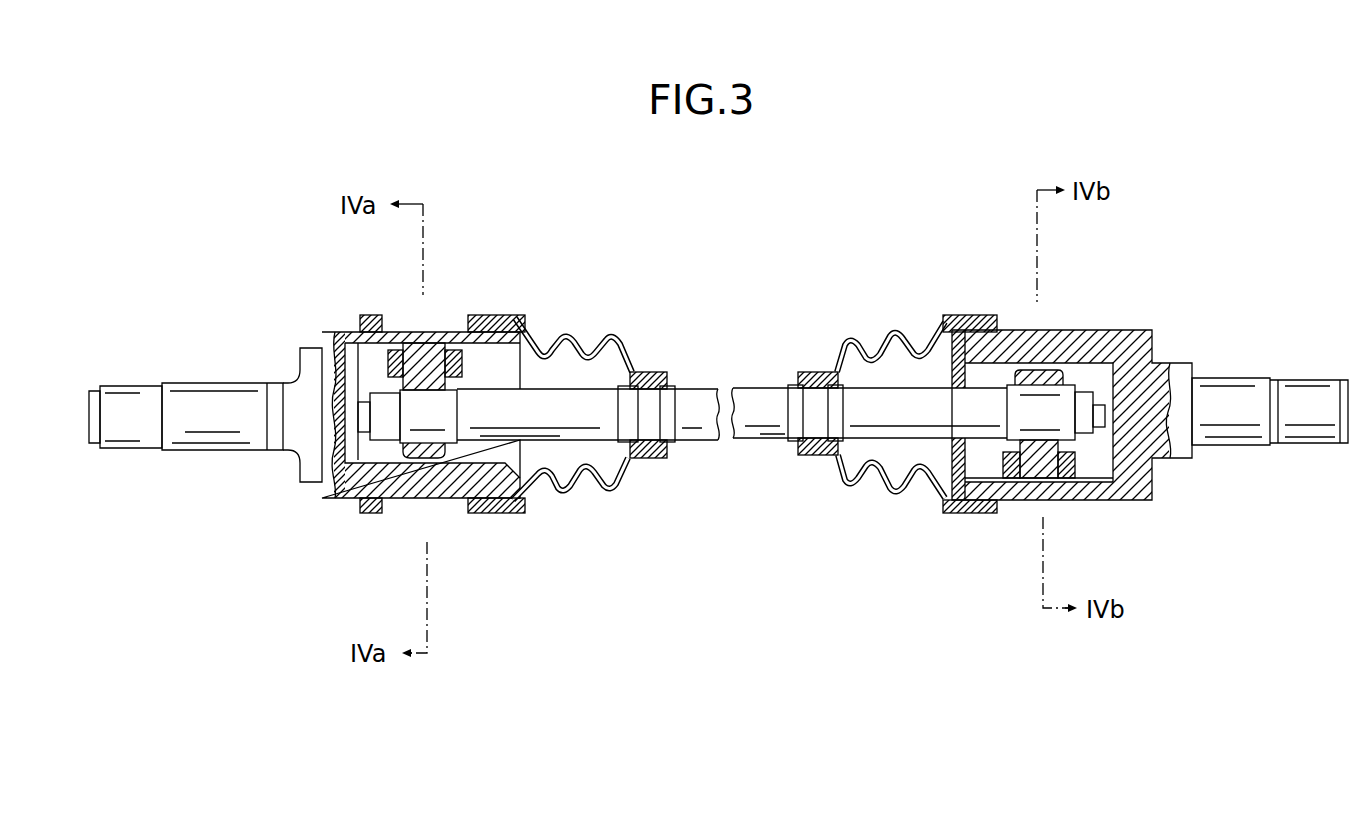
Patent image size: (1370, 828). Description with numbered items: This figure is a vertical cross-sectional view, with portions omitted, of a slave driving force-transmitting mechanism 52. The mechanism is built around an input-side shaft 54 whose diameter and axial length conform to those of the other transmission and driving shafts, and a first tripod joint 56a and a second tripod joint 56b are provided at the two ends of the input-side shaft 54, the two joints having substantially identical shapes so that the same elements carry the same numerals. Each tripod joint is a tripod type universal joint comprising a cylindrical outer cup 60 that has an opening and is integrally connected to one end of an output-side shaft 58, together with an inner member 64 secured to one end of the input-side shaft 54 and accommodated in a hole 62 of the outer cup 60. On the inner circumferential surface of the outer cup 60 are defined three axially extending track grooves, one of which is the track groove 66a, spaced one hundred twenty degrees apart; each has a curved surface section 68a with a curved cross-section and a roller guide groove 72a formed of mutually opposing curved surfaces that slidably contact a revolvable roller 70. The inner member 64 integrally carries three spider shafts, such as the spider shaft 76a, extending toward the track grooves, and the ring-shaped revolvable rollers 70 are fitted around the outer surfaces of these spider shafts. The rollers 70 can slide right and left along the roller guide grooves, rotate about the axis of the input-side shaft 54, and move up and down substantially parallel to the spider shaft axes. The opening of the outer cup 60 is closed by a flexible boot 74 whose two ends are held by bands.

The slave driving force-transmitting mechanism 52 is at (1068, 153).
The input-side shaft 54 is at (693, 433).
The first tripod joint 56a is at (574, 390).
The second tripod joint 56b is at (1082, 271).
The output-side shaft 58 is at (215, 398).
The outer cup 60 is at (443, 490).
The hole 62 is at (537, 492).
The inner member 64 is at (470, 357).
The track groove 66a is at (558, 338).
The curved surface section 68a is at (383, 350).
The revolvable roller 70 is at (390, 338).
The roller guide groove 72a is at (362, 365).
The flexible boot 74 is at (590, 338).
The spider shaft 76a is at (428, 345).